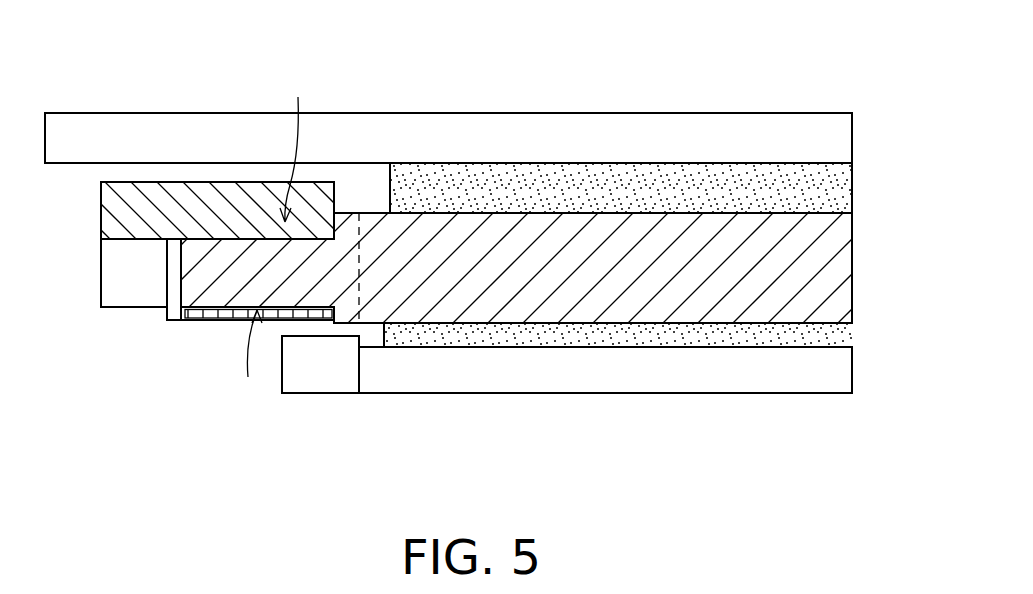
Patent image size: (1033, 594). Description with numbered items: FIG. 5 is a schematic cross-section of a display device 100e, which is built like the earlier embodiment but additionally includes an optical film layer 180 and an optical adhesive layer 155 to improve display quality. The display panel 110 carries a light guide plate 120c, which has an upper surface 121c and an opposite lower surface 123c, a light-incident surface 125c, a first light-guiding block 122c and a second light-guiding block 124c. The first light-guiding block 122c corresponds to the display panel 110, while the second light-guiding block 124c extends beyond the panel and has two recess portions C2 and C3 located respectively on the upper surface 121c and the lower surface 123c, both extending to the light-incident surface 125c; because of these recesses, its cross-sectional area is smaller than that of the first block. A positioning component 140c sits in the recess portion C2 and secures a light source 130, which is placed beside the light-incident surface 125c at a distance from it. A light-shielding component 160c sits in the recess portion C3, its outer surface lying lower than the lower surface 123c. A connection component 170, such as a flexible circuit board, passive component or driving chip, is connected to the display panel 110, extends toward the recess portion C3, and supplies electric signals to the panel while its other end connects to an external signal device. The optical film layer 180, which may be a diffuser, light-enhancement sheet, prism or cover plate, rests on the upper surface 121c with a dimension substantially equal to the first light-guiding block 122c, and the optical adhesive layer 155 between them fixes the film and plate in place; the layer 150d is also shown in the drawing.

The optical film layer 180 is at (828, 134).
The optical adhesive layer 155 is at (822, 177).
The upper surface 121c is at (818, 200).
The light guide plate 120c is at (453, 64).
The second light-guiding block 124c is at (347, 233).
The first light-guiding block 122c is at (460, 223).
The positioning component 140c is at (130, 200).
The recess portion C2 is at (295, 144).
The light source 130 is at (130, 289).
The light-incident surface 125c is at (168, 278).
The light-shielding component 160c is at (213, 315).
The recess portion C3 is at (250, 365).
The connection component 170 is at (313, 377).
The display panel 110 is at (837, 372).
The lower electrode layer 150d is at (452, 335).
The lower surface 123c is at (806, 327).
The display device 100e is at (827, 430).